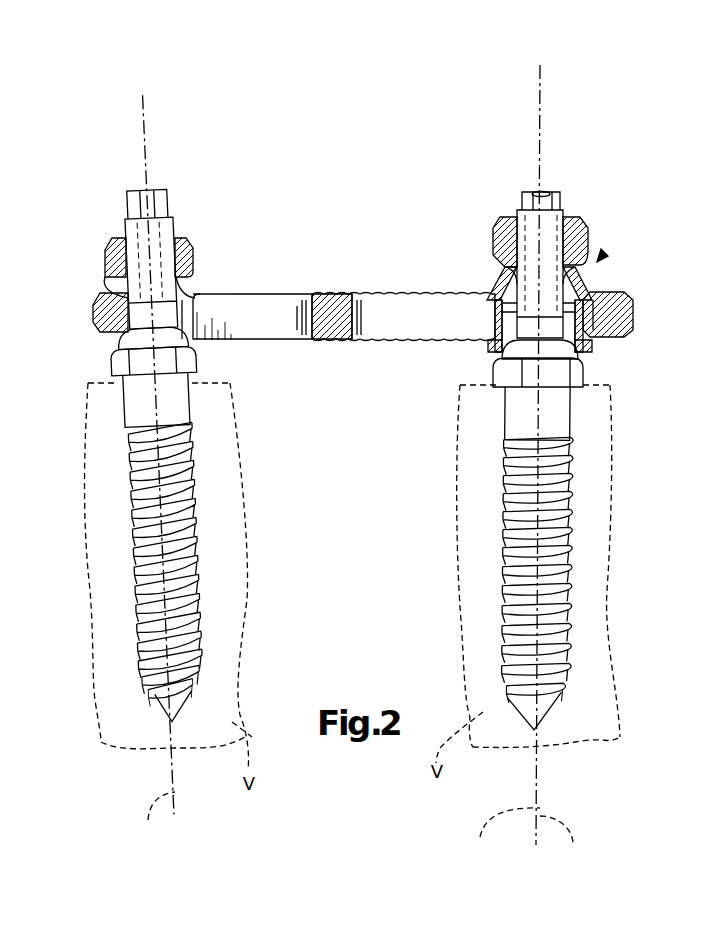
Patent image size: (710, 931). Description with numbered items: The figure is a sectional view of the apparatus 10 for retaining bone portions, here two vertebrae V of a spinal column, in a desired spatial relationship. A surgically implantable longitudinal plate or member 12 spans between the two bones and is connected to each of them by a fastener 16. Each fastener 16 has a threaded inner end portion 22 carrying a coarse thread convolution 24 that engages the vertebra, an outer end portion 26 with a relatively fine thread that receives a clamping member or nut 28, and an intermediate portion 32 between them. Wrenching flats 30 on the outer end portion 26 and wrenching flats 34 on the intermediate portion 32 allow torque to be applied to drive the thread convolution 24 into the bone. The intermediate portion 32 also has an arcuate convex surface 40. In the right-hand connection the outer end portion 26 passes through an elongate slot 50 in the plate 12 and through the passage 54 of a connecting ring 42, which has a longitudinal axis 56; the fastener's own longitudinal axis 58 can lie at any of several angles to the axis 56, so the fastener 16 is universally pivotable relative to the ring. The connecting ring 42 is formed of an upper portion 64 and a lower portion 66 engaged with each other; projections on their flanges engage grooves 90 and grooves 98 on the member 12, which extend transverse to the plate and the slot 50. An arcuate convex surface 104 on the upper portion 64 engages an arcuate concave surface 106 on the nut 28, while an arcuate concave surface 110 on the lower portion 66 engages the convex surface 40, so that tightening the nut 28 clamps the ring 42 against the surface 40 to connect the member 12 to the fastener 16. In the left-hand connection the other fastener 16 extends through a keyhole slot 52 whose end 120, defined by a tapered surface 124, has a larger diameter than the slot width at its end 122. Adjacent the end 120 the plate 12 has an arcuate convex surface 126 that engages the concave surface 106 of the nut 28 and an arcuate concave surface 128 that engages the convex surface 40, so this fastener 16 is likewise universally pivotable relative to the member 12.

The apparatus 10 is at (305, 103).
The longitudinal plate 12 is at (612, 312).
The fastener 16 is at (153, 663).
The threaded inner end portion 22 is at (167, 700).
The thread convolution 24 is at (200, 617).
The outer end portion 26 is at (128, 203).
The clamping member 28 is at (110, 250).
The wrenching flats 30 is at (163, 200).
The intermediate portion 32 is at (114, 366).
The wrenching flats 34 is at (203, 378).
The arcuate convex surface 40 is at (115, 340).
The connecting ring 42 is at (599, 256).
The elongate slot 50 is at (405, 315).
The keyhole slot 52 is at (262, 320).
The passage 54 is at (490, 287).
The longitudinal axis 56 is at (528, 626).
The longitudinal axis 58 is at (313, 621).
The upper portion 64 is at (590, 282).
The lower portion 66 is at (488, 345).
The grooves 90 is at (328, 295).
The grooves 98 is at (387, 340).
The arcuate convex surface 104 is at (615, 278).
The arcuate concave surface 106 is at (188, 285).
The arcuate concave surface 110 is at (496, 383).
The end 120 is at (195, 290).
The end 122 is at (296, 335).
The tapered surface 124 is at (108, 295).
The arcuate convex surface 126 is at (200, 293).
The arcuate concave surface 128 is at (200, 340).